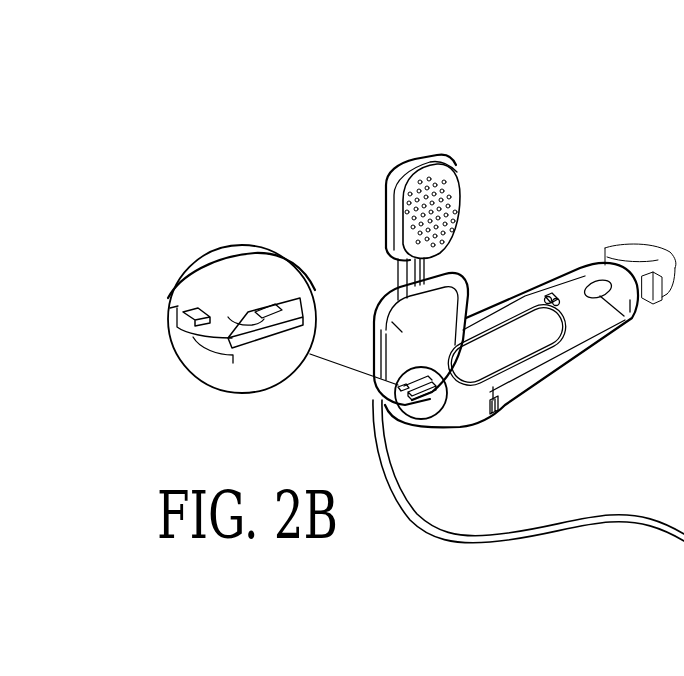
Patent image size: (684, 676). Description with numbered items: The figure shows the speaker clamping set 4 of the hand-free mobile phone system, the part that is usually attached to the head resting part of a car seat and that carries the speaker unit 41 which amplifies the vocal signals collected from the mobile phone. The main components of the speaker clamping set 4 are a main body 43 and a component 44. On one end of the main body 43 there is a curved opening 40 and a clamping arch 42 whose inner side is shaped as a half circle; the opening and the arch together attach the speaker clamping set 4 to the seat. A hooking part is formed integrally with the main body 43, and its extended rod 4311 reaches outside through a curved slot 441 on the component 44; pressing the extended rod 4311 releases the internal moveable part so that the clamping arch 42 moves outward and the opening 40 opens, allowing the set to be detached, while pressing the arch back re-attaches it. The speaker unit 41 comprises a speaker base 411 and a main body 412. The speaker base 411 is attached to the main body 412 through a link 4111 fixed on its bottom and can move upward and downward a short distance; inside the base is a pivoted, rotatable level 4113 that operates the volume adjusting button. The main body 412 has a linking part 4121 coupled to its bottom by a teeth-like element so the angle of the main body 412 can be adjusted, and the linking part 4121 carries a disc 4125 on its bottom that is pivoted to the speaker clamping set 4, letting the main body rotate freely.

The speaker clamping set 4 is at (571, 396).
The curved opening 40 is at (628, 324).
The speaker unit 41 is at (387, 118).
The speaker base 411 is at (393, 177).
The link 4111 is at (402, 330).
The level 4113 is at (450, 262).
The main body 412 is at (377, 300).
The linking part 4121 is at (252, 313).
The disc 4125 is at (200, 322).
The clamping arch 42 is at (583, 270).
The main body 43 is at (570, 358).
The extended rod 4311 is at (555, 294).
The component 44 is at (580, 327).
The curved slot 441 is at (522, 303).